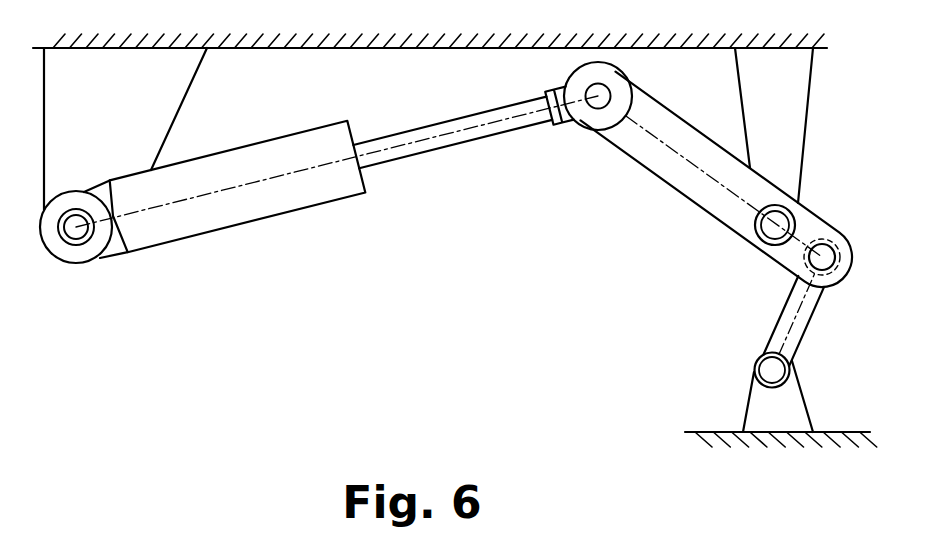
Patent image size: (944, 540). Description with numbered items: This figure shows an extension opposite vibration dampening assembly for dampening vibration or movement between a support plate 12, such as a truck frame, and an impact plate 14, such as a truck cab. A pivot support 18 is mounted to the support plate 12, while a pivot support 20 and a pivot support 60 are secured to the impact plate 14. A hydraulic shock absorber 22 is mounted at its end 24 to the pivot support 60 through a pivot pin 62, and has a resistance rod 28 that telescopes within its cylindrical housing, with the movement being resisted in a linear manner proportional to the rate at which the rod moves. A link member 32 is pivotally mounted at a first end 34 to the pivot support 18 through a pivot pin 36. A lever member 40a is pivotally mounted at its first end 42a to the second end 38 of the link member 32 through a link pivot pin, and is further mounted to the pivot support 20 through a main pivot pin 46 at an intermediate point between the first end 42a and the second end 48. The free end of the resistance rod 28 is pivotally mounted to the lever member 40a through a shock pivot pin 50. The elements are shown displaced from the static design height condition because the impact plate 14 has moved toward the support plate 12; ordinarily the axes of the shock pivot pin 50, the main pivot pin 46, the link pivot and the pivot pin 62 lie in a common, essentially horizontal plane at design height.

The support plate 12 is at (715, 432).
The impact plate 14 is at (458, 48).
The pivot support 18 is at (797, 400).
The pivot support 20 is at (809, 82).
The hydraulic shock absorber 22 is at (263, 141).
The end of shock absorber 24 is at (100, 188).
The resistance rod 28 is at (457, 145).
The link member 32 is at (813, 313).
The first end of link member 34 is at (770, 340).
The pivot pin 36 is at (772, 370).
The second end of link member 38 is at (834, 243).
The lever member 40a is at (693, 201).
The first end of lever member 42a is at (851, 256).
The main pivot pin 46 is at (775, 225).
The second end of lever member 48 is at (629, 80).
The shock pivot pin 50 is at (598, 96).
The pivot support 60 is at (102, 98).
The pivot pin 62 is at (78, 230).